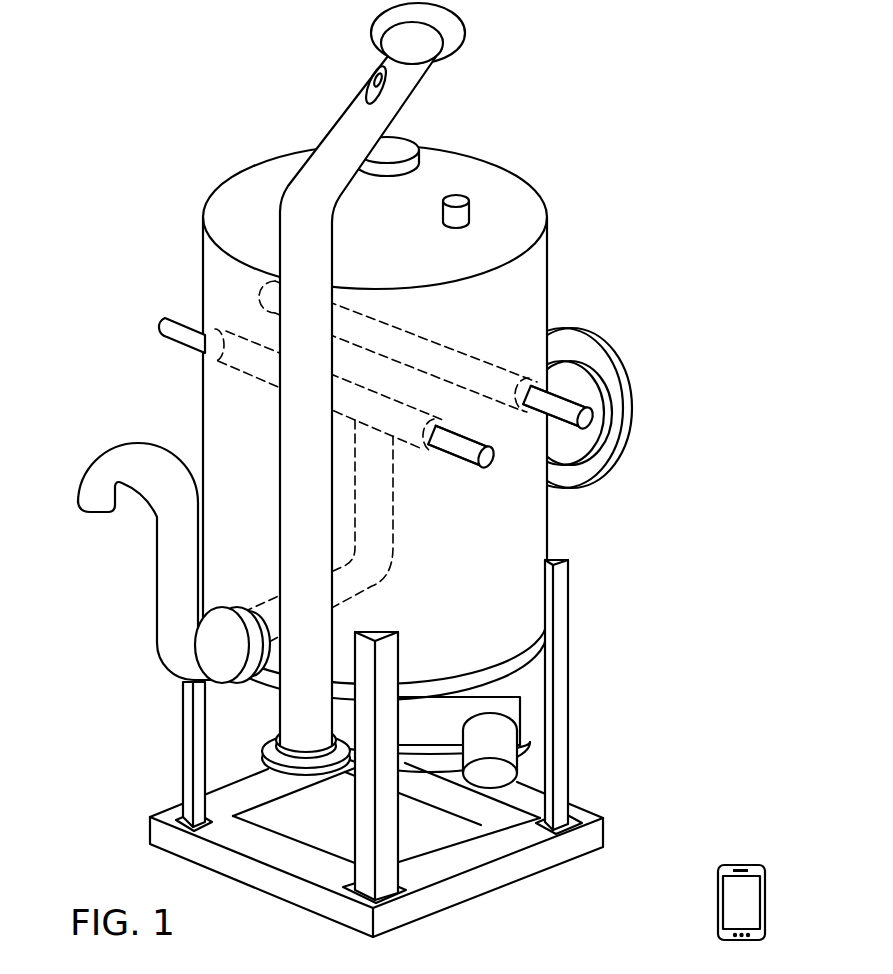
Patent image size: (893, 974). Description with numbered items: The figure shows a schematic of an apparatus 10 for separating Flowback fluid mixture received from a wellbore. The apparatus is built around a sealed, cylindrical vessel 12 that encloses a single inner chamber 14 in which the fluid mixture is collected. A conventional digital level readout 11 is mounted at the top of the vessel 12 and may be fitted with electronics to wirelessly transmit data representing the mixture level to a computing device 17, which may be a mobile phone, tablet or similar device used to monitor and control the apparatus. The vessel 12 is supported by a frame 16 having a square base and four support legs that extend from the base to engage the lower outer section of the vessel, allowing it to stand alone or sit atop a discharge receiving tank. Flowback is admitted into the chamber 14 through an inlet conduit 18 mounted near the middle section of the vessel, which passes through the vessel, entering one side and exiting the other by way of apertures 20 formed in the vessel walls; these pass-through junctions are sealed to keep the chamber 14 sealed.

The apparatus 10 is at (113, 194).
The digital level readout 11 is at (470, 210).
The vessel 12 is at (547, 258).
The inner chamber 14 is at (472, 597).
The frame 16 is at (562, 687).
The computing device 17 is at (768, 892).
The inlet conduit 18 is at (162, 320).
The apertures 20 is at (205, 346).